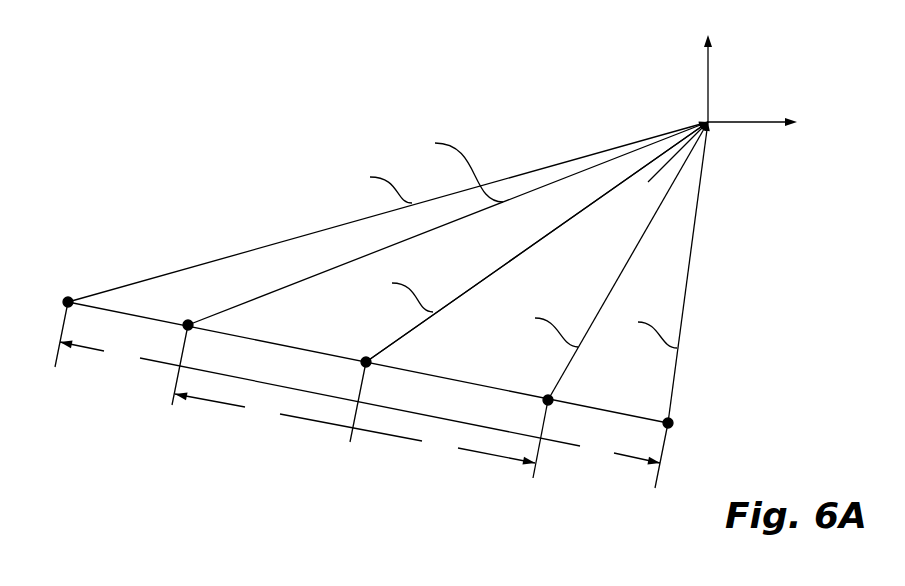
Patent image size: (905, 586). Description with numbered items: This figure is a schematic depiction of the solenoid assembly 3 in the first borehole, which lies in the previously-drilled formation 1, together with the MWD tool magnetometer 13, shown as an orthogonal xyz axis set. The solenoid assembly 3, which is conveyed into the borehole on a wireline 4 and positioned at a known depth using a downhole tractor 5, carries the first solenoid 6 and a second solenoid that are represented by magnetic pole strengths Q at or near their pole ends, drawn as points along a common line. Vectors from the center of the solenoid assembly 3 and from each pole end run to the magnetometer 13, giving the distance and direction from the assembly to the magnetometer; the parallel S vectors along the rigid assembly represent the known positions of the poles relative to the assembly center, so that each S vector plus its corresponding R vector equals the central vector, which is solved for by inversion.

The previously-drilled formation 1 is at (607, 410).
The solenoid assembly 3 is at (48, 267).
The wireline 4 is at (333, 172).
The downhole tractor 5 is at (512, 260).
The first solenoid 6 is at (108, 375).
The magnetometer 13 is at (708, 95).